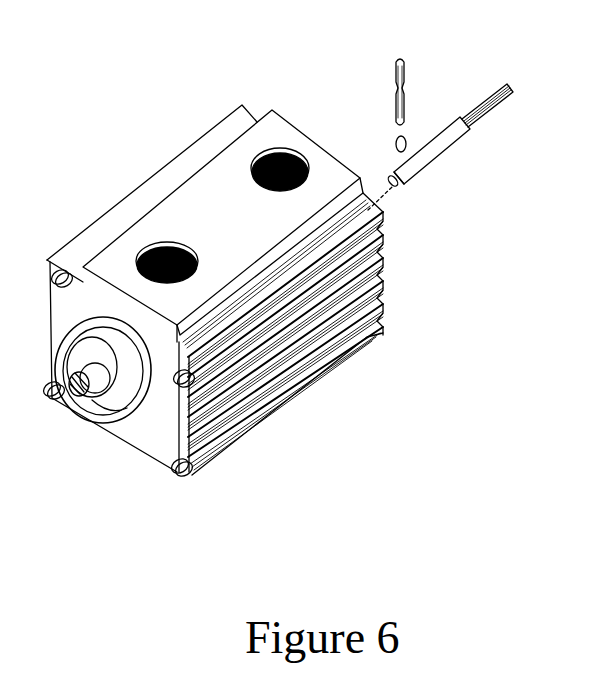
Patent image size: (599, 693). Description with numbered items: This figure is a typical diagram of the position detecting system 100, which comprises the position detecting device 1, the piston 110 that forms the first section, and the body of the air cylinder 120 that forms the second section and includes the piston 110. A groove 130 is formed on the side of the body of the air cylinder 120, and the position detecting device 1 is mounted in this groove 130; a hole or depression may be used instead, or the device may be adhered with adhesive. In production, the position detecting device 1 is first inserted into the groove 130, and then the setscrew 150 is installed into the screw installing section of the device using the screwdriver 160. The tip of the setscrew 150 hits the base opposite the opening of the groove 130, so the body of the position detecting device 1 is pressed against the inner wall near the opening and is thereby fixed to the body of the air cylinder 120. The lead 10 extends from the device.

The position detecting device 1 is at (432, 172).
The cable 10 is at (504, 110).
The position detecting system 100 is at (231, 312).
The piston 110 is at (57, 398).
The body of the air cylinder 120 is at (365, 335).
The groove 130 is at (167, 372).
The setscrew 150 is at (397, 138).
The screwdriver 160 is at (397, 60).